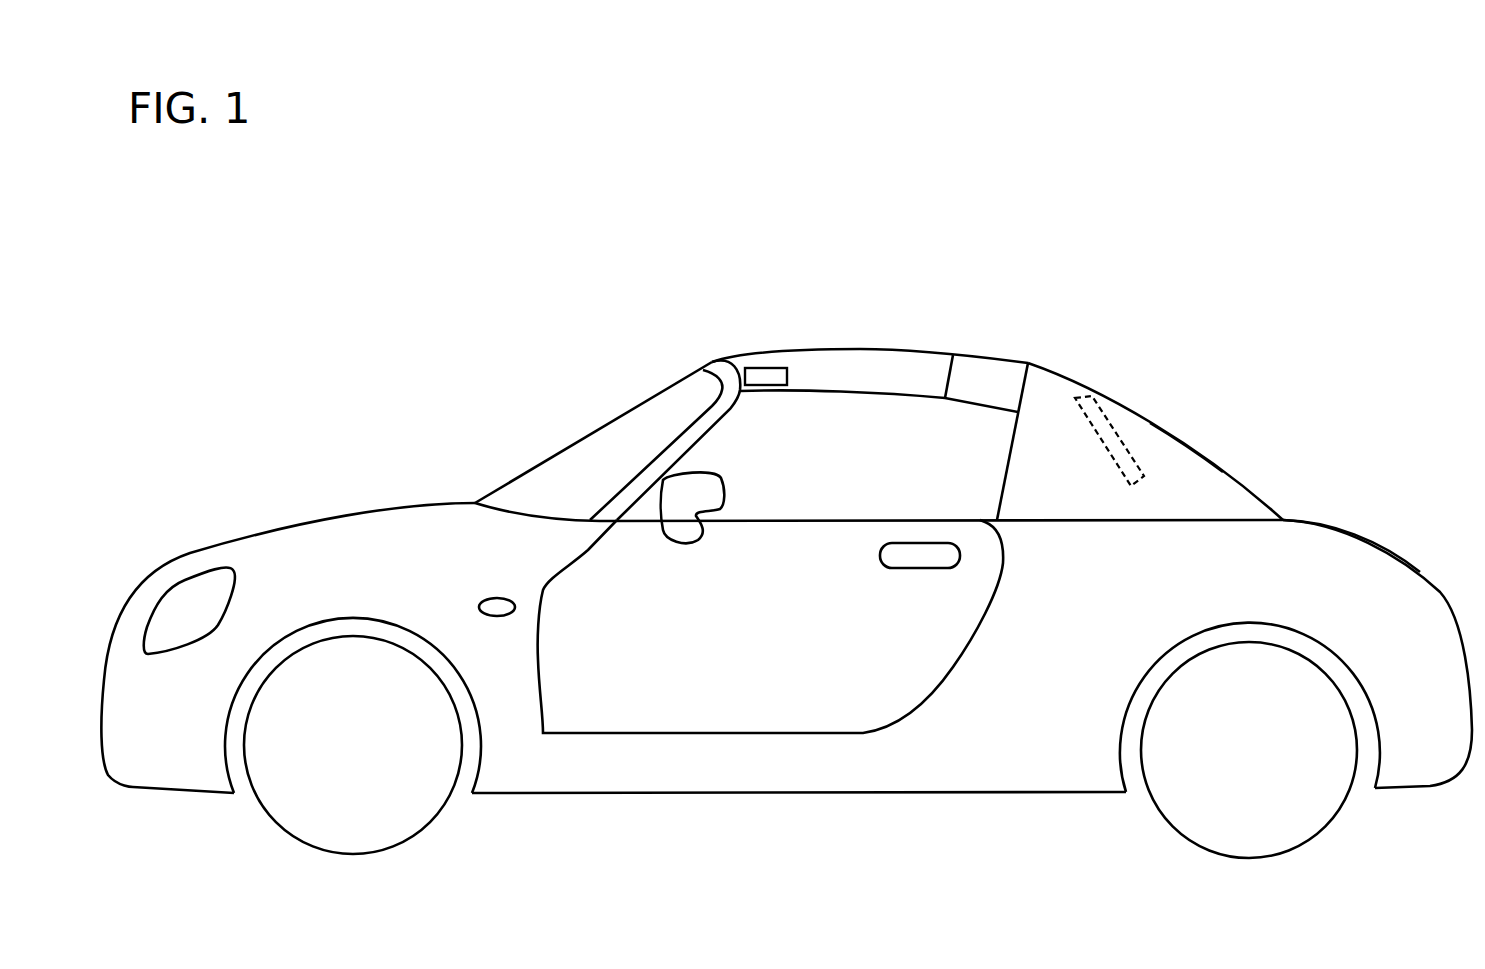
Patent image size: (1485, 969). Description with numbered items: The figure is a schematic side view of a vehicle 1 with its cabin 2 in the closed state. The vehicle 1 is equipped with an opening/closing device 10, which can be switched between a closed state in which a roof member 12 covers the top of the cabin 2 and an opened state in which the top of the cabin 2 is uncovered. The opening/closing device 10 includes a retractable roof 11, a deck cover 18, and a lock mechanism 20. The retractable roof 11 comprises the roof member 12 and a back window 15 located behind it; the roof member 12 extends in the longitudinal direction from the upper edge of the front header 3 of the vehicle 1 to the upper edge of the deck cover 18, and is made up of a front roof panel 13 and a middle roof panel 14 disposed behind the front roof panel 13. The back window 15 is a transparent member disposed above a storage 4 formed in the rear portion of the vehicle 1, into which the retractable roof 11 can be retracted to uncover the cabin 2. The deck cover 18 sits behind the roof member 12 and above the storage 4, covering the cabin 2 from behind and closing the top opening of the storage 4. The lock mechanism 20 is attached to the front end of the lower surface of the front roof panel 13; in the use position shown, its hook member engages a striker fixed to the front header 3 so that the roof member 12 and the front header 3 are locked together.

The vehicle 1 is at (433, 321).
The cabin 2 is at (780, 647).
The front header 3 is at (707, 361).
The storage 4 is at (1106, 651).
The opening/closing device 10 is at (1240, 349).
The retractable roof 11 is at (963, 286).
The roof member 12 is at (841, 349).
The front roof panel 13 is at (909, 353).
The middle roof panel 14 is at (990, 356).
The back window 15 is at (1122, 444).
The deck cover 18 is at (1223, 467).
The lock mechanism 20 is at (766, 368).